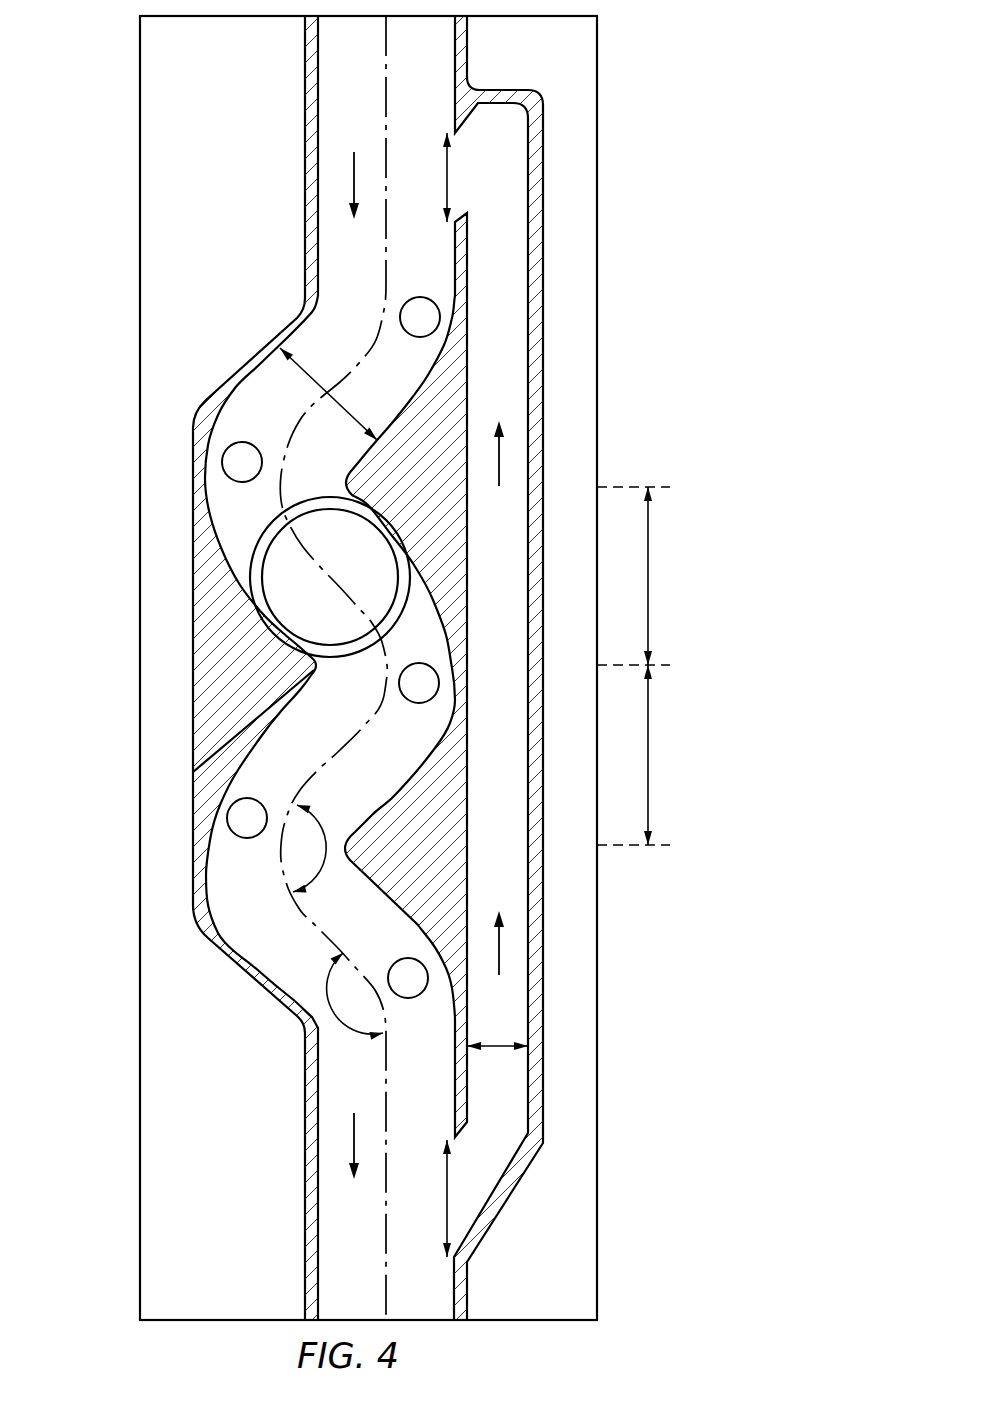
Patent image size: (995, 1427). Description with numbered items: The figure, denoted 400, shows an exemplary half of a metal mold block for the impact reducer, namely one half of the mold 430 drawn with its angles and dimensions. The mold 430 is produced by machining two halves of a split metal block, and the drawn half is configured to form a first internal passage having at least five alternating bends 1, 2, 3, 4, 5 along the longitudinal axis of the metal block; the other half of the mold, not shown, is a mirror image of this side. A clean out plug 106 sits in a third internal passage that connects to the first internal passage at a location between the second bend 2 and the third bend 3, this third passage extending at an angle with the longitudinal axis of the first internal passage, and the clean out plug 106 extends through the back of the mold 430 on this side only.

The channel assembly 400 is at (657, 43).
The mold 430 is at (133, 366).
The clean out plug 106 is at (258, 540).
The first bend 1 is at (420, 317).
The second bend 2 is at (242, 462).
The third bend 3 is at (419, 683).
The fourth bend 4 is at (247, 818).
The fifth bend 5 is at (408, 978).